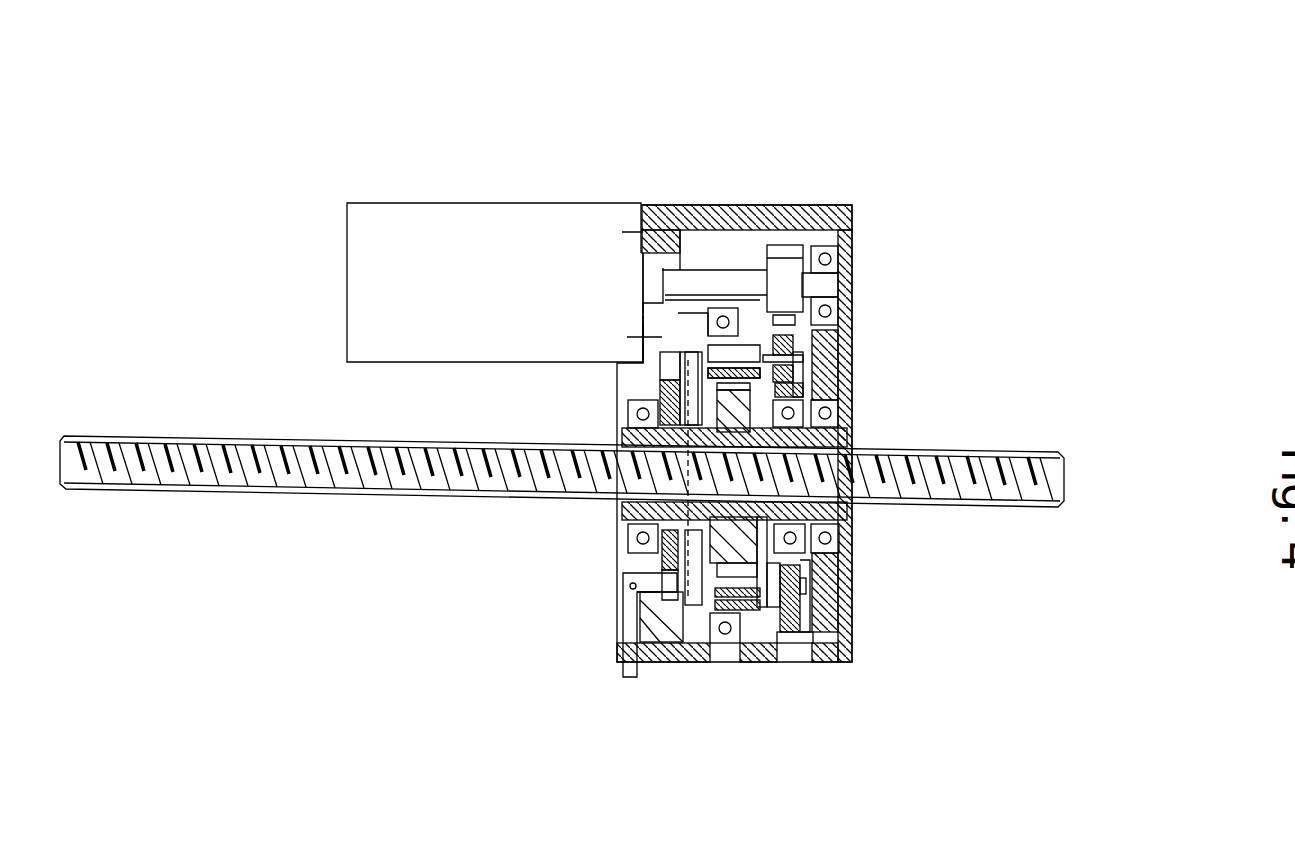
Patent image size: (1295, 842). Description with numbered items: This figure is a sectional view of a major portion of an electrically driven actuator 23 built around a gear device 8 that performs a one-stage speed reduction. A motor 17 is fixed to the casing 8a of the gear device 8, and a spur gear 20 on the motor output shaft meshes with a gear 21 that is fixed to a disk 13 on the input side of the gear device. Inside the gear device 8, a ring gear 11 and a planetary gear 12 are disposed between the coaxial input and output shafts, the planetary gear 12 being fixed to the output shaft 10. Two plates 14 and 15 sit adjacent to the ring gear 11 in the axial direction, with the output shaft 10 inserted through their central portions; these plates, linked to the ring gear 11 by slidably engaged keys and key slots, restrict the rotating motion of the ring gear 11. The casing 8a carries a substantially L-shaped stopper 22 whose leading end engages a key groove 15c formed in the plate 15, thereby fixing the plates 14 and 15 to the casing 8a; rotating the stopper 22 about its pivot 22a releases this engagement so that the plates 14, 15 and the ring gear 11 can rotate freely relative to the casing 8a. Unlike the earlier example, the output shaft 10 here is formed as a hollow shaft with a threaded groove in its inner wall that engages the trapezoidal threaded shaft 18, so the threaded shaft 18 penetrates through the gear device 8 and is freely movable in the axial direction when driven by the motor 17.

The gear device 8 is at (840, 655).
The casing 8a is at (718, 215).
The output shaft 10 is at (620, 510).
The ring gear 11 is at (768, 650).
The planetary gear 12 is at (740, 540).
The disk 13 is at (777, 645).
The plate 14 is at (697, 640).
The plate 15 is at (668, 385).
The key groove 15c is at (667, 600).
The motor 17 is at (498, 225).
The threaded shaft 18 is at (264, 498).
The gear 20 is at (787, 243).
The gear 21 is at (797, 603).
The stopper 22 is at (620, 645).
The pivot 22a is at (620, 588).
The electrically driven actuator 23 is at (938, 156).